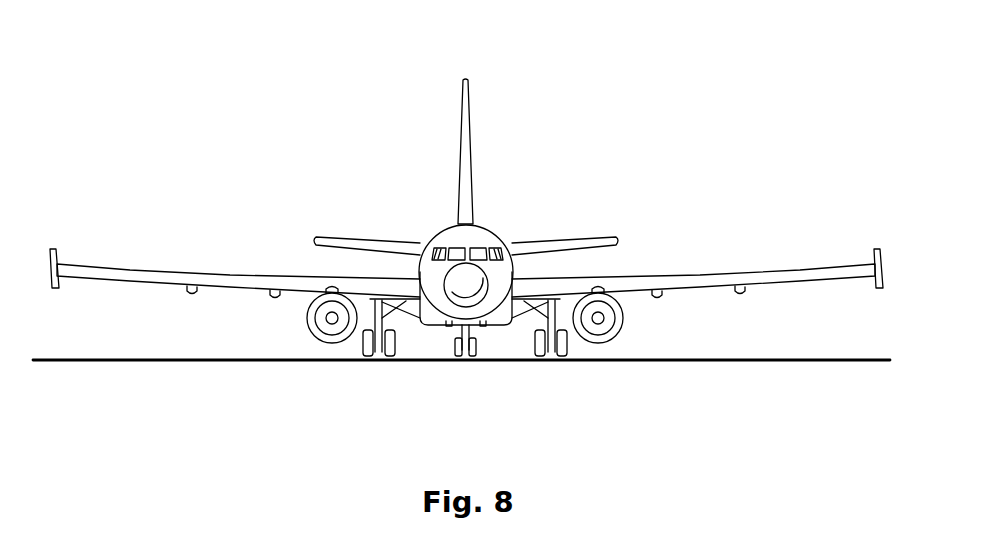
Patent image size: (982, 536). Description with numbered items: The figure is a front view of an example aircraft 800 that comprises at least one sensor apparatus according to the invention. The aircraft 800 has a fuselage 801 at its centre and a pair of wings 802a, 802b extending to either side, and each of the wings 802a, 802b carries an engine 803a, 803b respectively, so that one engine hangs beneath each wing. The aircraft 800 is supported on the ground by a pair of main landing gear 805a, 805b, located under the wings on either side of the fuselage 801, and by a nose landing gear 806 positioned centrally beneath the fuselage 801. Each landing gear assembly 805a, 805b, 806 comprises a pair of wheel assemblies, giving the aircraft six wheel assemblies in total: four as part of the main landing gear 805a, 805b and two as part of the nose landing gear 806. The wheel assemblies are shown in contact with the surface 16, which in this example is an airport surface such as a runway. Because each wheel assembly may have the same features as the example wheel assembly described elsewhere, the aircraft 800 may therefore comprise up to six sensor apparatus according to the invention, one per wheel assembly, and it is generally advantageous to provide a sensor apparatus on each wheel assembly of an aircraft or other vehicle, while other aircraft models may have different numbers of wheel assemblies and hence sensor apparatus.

The surface 16 is at (85, 362).
The aircraft 800 is at (327, 85).
The fuselage 801 is at (483, 228).
The wing 802a is at (183, 277).
The wing 802b is at (692, 276).
The engine 803a is at (315, 340).
The engine 803b is at (616, 341).
The main landing gear 805a is at (372, 371).
The main landing gear 805b is at (553, 371).
The nose landing gear 806 is at (465, 369).